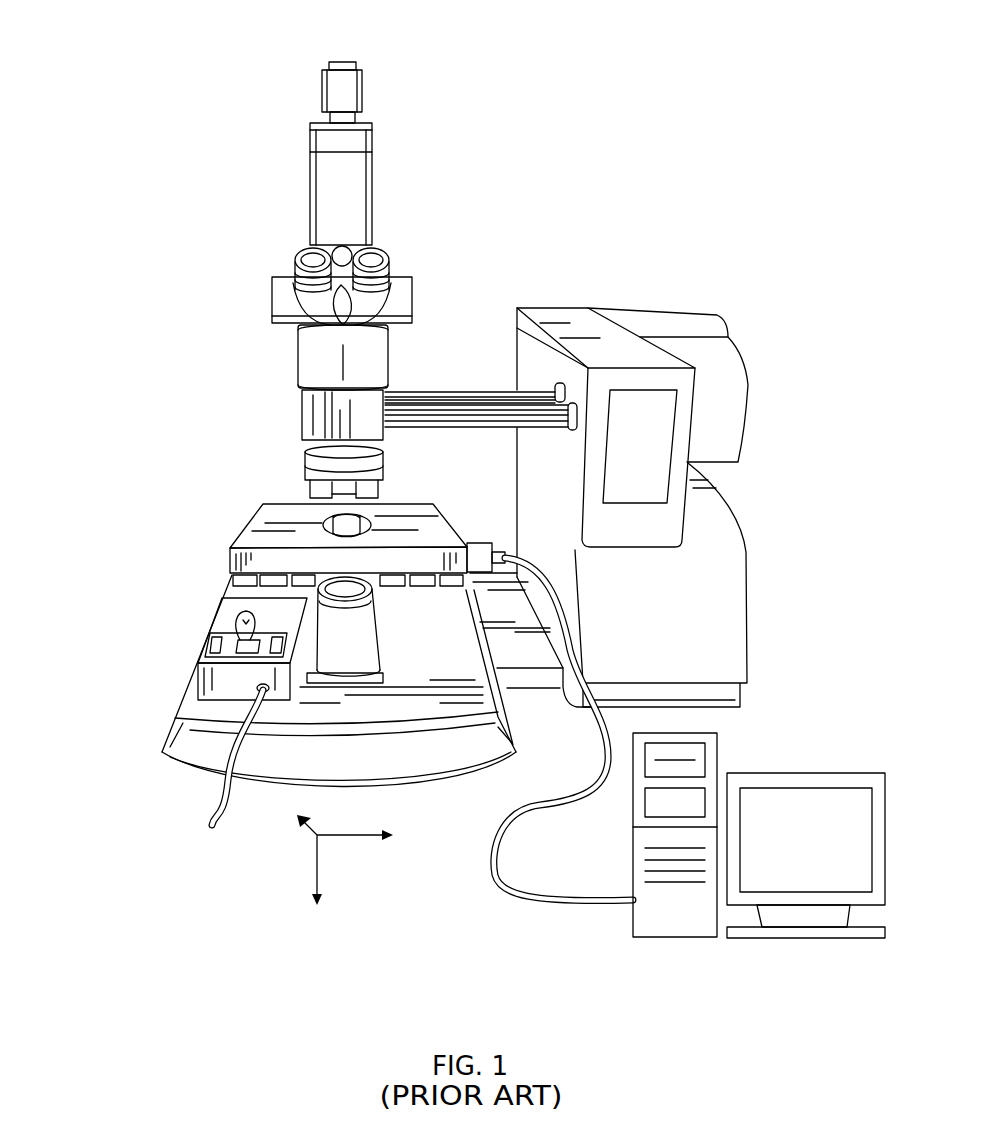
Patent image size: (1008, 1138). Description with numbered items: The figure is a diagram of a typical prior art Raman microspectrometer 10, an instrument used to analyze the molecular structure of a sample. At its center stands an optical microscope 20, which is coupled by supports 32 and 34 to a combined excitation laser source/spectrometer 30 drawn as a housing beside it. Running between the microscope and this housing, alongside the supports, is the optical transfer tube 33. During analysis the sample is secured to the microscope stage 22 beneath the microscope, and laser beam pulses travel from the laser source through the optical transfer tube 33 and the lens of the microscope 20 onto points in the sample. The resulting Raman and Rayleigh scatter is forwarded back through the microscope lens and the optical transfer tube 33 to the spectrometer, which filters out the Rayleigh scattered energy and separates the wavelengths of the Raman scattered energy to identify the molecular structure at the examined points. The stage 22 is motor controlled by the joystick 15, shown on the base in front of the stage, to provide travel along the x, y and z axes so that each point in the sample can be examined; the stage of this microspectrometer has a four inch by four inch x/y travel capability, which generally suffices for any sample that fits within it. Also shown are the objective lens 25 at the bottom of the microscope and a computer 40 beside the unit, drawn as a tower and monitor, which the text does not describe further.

The Raman microspectrometer 10 is at (190, 64).
The joystick 15 is at (202, 627).
The optical microscope 20 is at (245, 338).
The microscope stage 22 is at (253, 543).
The objective lens 25 is at (298, 492).
The combined excitation laser source/spectrometer 30 is at (702, 610).
The support 32 is at (448, 395).
The optical transfer tube 33 is at (469, 405).
The support 34 is at (493, 418).
The computer 40 is at (842, 754).